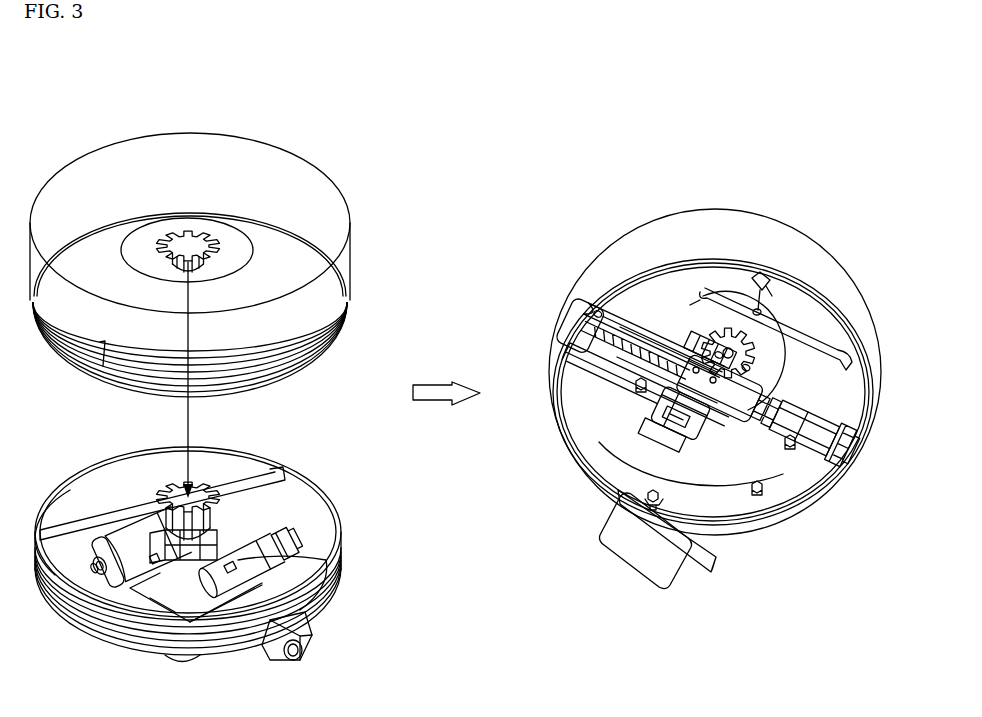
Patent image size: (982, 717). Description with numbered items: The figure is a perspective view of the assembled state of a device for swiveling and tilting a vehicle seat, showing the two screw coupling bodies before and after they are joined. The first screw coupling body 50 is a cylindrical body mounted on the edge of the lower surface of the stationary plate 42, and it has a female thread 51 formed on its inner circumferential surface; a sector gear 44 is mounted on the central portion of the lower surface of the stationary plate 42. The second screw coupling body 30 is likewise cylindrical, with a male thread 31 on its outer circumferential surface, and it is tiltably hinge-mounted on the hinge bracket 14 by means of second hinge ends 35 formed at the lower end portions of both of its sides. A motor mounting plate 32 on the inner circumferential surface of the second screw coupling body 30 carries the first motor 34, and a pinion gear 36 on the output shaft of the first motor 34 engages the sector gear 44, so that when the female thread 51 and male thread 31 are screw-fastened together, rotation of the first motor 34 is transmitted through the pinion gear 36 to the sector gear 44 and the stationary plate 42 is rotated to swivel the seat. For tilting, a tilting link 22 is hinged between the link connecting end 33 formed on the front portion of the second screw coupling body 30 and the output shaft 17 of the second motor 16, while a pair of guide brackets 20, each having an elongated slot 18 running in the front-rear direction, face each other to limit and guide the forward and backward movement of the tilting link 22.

The hinge bracket 14 is at (553, 412).
The second motor 16 is at (278, 558).
The output shaft 17 is at (707, 432).
The elongated slot 18 is at (677, 423).
The guide bracket 20 is at (692, 550).
The tilting link 22 is at (673, 403).
The second screw coupling body 30 is at (317, 482).
The male thread 31 is at (340, 571).
The motor mounting plate 32 is at (170, 593).
The link connecting end 33 is at (618, 325).
The first motor 34 is at (130, 533).
The second hinge end 35 is at (307, 632).
The pinion gear 36 is at (207, 485).
The stationary plate 42 is at (283, 247).
The sector gear 44 is at (197, 233).
The first screw coupling body 50 is at (347, 264).
The female thread 51 is at (303, 340).